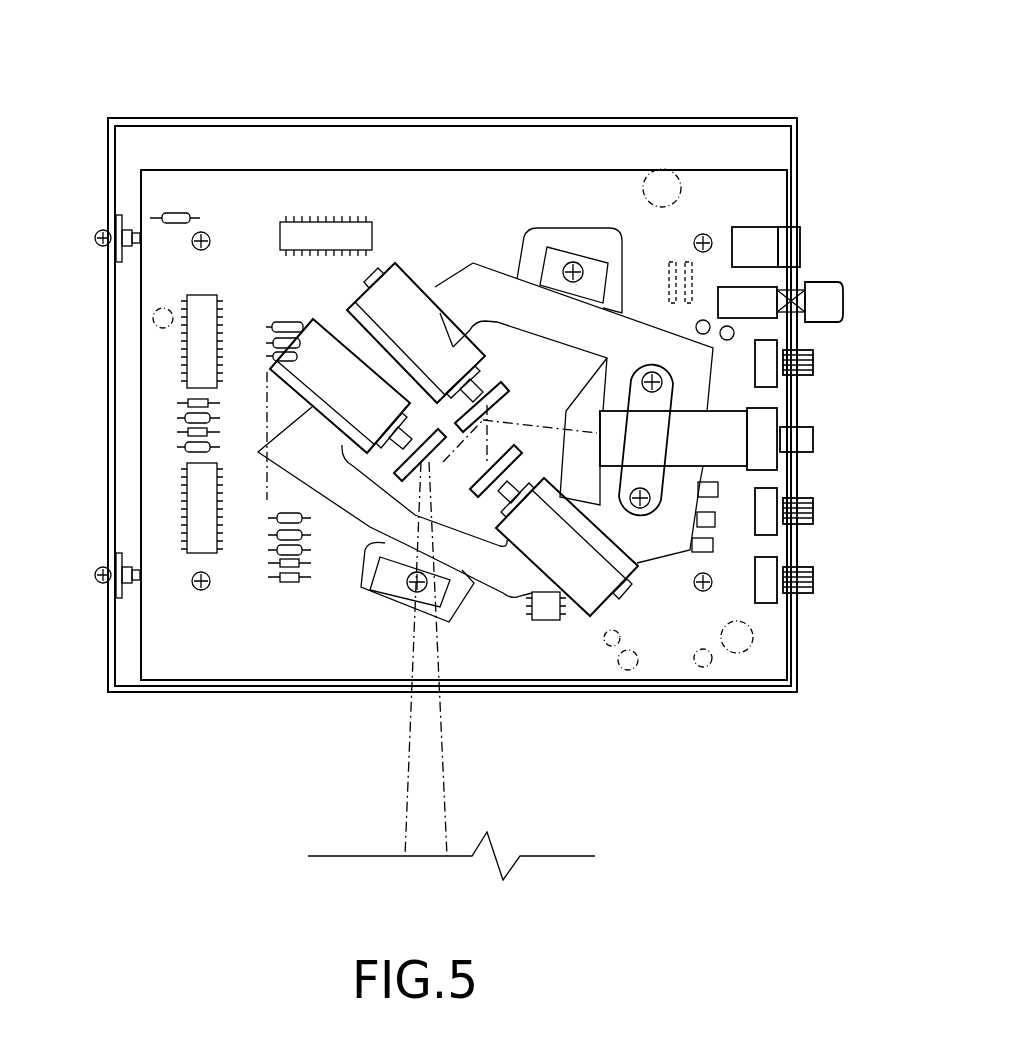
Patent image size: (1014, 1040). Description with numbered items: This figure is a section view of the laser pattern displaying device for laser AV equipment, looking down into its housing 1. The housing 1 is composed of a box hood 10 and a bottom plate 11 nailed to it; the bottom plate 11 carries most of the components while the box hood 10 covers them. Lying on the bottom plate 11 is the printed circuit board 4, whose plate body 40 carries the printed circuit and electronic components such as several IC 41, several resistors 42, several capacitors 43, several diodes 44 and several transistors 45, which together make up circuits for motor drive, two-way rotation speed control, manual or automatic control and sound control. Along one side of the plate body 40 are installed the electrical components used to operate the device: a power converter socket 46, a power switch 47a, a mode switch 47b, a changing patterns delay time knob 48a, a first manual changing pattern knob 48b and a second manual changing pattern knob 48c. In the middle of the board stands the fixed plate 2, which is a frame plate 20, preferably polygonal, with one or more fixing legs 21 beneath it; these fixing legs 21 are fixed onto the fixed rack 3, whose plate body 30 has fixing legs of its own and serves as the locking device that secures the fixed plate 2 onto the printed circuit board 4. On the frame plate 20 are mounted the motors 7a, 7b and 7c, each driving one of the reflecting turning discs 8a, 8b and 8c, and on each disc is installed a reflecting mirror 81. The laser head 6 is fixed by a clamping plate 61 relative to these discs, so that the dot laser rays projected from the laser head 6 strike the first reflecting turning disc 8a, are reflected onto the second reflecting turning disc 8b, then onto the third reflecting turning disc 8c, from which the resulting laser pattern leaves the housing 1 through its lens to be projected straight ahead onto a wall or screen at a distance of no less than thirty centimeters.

The housing 1 is at (800, 114).
The fixed plate 2 is at (515, 274).
The fixed rack 3 is at (586, 220).
The printed circuit board 4 is at (185, 697).
The laser head 6 is at (751, 473).
The motor 7a is at (401, 262).
The motor 7b is at (616, 598).
The motor 7c is at (312, 318).
The first reflecting turning disc 8a is at (507, 400).
The second reflecting turning disc 8b is at (483, 497).
The third reflecting turning disc 8c is at (400, 478).
The box hood 10 is at (657, 117).
The bottom plate 11 is at (127, 662).
The frame plate 20 is at (353, 520).
The fixing legs 21 is at (551, 257).
The plate body 30 is at (505, 350).
The plate body 40 is at (160, 628).
The IC 41 is at (325, 238).
The resistors 42 is at (282, 327).
The capacitors 43 is at (683, 182).
The diodes 44 is at (187, 404).
The transistors 45 is at (708, 518).
The power converter socket 46 is at (795, 243).
The power switch 47a is at (833, 288).
The mode switch 47b is at (813, 440).
The changing patterns delay time knob 48a is at (812, 367).
The first manual changing pattern knob 48b is at (805, 515).
The second manual changing pattern knob 48c is at (805, 583).
The clamping plate 61 is at (667, 392).
The reflecting mirror 81 is at (478, 466).